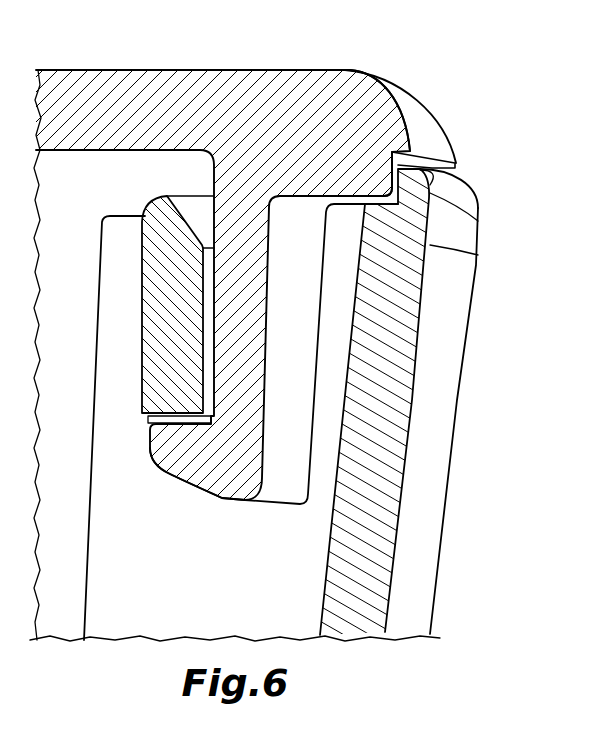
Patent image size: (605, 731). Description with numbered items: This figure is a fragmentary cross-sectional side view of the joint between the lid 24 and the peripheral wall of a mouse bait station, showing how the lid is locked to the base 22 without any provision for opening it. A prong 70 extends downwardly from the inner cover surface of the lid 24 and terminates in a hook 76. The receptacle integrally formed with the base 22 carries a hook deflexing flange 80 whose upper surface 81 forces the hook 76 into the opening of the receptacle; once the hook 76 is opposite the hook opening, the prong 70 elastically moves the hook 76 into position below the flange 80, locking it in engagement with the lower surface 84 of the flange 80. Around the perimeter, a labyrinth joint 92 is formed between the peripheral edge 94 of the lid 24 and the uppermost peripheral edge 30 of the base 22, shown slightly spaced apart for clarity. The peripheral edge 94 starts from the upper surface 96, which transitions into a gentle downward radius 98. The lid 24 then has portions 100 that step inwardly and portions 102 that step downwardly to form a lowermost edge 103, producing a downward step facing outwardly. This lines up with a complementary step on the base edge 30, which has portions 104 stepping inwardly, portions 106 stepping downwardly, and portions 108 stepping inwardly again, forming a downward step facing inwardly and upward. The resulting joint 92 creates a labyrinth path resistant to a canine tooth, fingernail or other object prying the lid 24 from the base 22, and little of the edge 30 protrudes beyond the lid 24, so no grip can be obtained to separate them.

The base 22 is at (438, 508).
The lid 24 is at (102, 68).
The uppermost peripheral edge of the base 30 is at (461, 179).
The prong 70 is at (262, 459).
The hook 76 is at (187, 480).
The hook deflexing flange 80 is at (148, 308).
The upper surface of the flange 81 is at (170, 195).
The lower surface of the flange 84 is at (167, 412).
The labyrinth joint 92 is at (492, 106).
The peripheral edge of the lid 94 is at (457, 160).
The upper surface of the lid 96 is at (275, 69).
The gentle downward radius 98 is at (407, 100).
The inwardly stepping portions of the lid 100 is at (402, 143).
The downwardly stepping portions of the lid 102 is at (391, 158).
The lowermost edge of the lid 103 is at (383, 188).
The inwardly stepping portions of the base edge 104 is at (470, 198).
The downwardly stepping portions of the base edge 106 is at (478, 222).
The second inwardly stepping portions of the base edge 108 is at (478, 254).